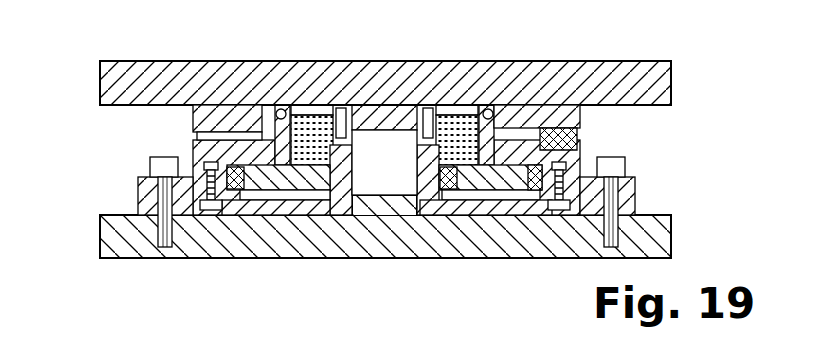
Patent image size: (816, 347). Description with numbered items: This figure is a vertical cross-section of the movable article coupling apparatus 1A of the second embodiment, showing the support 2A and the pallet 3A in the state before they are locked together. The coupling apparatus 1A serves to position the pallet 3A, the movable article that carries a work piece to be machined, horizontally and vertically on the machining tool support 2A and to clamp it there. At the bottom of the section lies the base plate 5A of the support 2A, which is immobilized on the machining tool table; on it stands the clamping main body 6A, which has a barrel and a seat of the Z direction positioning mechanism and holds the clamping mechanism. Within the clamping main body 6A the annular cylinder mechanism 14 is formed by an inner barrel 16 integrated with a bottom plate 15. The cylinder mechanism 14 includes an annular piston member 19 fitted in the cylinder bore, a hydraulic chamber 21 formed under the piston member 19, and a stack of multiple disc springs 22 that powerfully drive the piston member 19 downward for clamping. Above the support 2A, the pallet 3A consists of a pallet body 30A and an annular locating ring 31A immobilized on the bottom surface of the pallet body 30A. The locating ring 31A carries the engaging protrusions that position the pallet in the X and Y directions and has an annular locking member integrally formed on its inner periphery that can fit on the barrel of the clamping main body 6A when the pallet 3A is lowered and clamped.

The movable article coupling apparatus 1A is at (120, 148).
The support 2A is at (672, 196).
The pallet 3A is at (370, 77).
The base plate 5A is at (106, 234).
The clamping main body 6A is at (138, 192).
The annular cylinder mechanism 14 is at (272, 192).
The bottom plate 15 is at (324, 214).
The inner barrel 16 is at (417, 166).
The annular piston member 19 is at (536, 195).
The hydraulic chamber 21 is at (501, 200).
The disc springs 22 is at (462, 190).
The pallet body 30A is at (100, 82).
The locating ring 31A is at (193, 112).